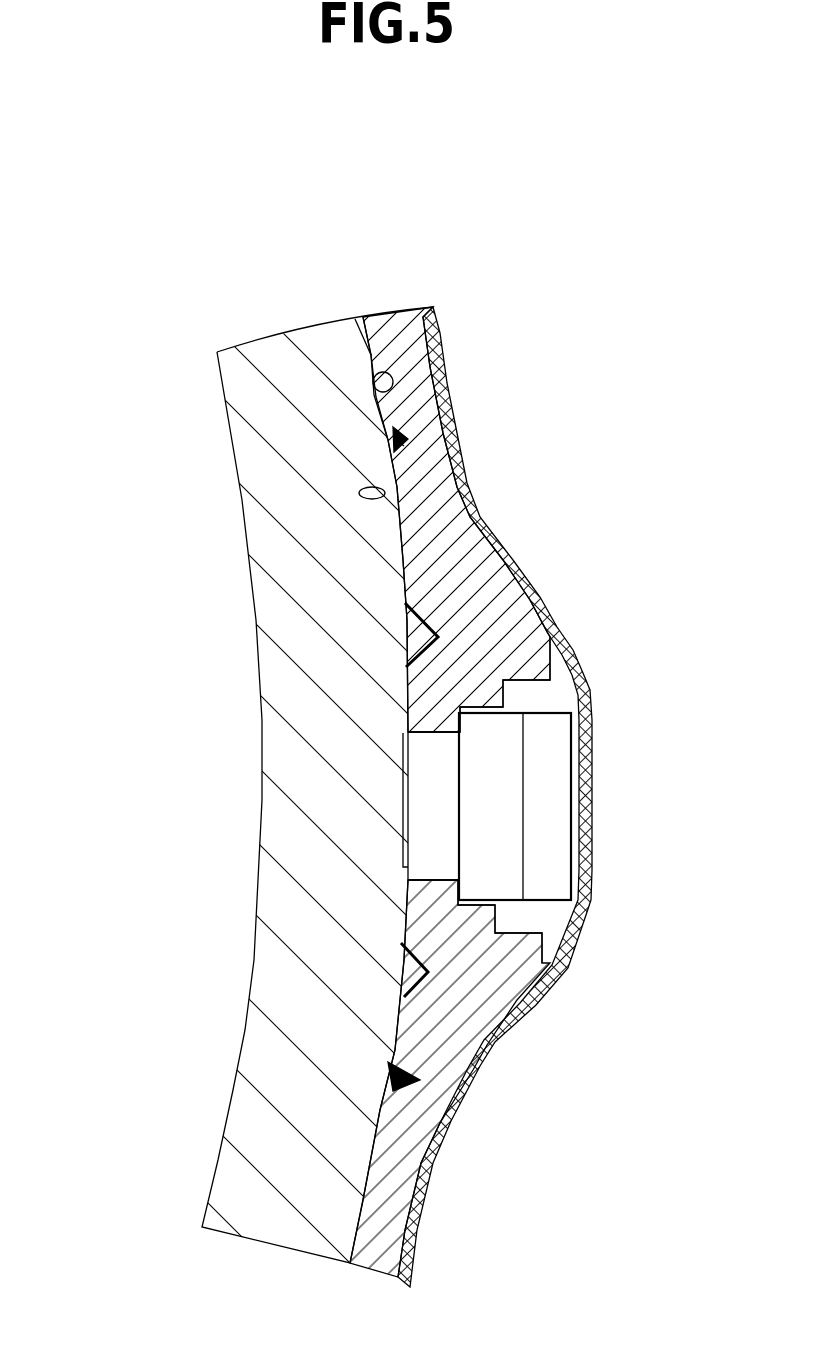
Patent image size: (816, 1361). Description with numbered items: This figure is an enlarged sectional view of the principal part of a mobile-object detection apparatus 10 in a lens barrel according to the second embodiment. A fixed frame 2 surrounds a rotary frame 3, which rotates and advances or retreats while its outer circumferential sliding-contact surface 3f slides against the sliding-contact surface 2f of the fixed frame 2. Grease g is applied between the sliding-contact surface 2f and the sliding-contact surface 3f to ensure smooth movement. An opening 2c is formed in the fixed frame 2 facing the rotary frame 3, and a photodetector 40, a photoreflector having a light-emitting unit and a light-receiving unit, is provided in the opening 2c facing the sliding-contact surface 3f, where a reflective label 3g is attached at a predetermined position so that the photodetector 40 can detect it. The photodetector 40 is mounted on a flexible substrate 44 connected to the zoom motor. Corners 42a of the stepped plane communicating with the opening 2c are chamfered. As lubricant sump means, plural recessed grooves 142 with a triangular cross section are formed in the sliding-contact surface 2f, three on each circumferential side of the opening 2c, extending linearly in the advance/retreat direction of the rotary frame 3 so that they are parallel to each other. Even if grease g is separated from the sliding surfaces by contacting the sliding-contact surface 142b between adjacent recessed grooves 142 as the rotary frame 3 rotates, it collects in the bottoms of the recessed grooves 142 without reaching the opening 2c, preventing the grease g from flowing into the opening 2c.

The mobile-object detection apparatus 10 is at (147, 280).
The fixed frame 2 is at (403, 263).
The rotary frame 3 is at (218, 526).
The sliding-contact surface 2f is at (368, 342).
The sliding-contact surface 3f is at (378, 385).
The recessed grooves 142 is at (400, 447).
The grease g is at (403, 443).
The sliding-contact surface 142b is at (390, 493).
The flexible substrate 44 is at (513, 563).
The opening 2c is at (435, 757).
The corners 42a is at (403, 730).
The reflective label 3g is at (455, 835).
The photodetector 40 is at (547, 830).